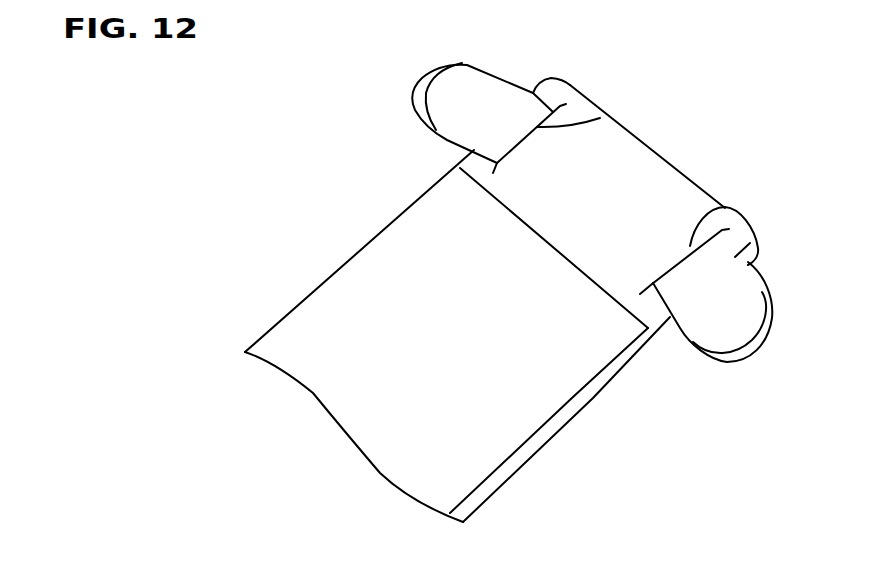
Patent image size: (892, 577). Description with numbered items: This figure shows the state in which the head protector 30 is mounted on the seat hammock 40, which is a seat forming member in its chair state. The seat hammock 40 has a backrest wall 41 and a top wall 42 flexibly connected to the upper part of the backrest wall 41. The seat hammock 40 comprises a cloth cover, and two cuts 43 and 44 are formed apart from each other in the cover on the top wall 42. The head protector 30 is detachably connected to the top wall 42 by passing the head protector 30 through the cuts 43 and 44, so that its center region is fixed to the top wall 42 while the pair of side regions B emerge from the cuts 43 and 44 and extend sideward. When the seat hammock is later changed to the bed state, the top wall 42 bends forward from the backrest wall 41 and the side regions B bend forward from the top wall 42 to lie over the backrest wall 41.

The head protector 30 is at (523, 55).
The seat hammock 40 is at (328, 182).
The backrest wall 41 is at (337, 283).
The top wall 42 is at (647, 163).
The cut 43 is at (720, 207).
The cut 44 is at (600, 118).
The side region B is at (450, 97).